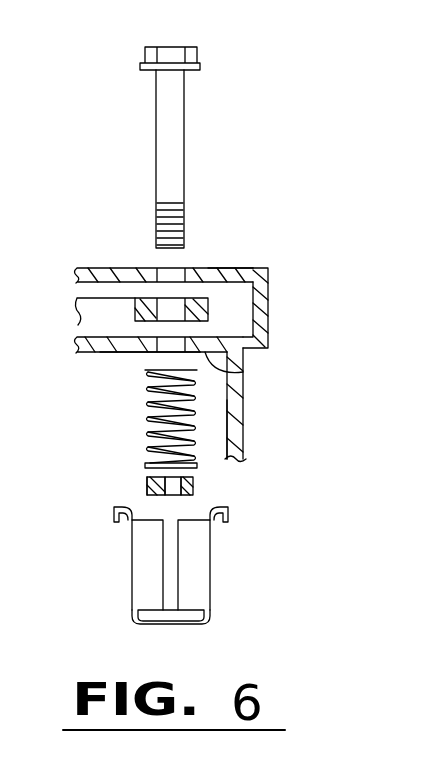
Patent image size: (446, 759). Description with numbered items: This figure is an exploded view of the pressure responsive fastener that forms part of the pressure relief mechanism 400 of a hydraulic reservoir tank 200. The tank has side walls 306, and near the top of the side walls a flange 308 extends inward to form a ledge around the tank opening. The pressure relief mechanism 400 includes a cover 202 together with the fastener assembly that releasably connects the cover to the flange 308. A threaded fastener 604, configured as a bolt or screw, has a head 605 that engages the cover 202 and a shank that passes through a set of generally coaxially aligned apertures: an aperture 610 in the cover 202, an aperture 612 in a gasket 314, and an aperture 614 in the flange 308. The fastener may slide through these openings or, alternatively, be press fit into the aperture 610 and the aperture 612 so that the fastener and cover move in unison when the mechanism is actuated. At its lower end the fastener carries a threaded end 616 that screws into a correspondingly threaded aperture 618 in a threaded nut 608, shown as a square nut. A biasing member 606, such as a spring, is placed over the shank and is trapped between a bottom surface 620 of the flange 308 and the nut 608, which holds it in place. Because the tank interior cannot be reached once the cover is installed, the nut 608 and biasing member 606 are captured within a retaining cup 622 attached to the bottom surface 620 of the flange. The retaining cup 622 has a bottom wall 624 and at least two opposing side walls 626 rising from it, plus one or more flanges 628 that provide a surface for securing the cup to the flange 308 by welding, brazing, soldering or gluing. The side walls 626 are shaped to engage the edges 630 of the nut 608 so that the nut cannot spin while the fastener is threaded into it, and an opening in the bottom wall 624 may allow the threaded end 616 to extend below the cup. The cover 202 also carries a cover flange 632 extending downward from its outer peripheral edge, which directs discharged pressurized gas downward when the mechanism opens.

The pressure relief mechanism 400 is at (84, 199).
The threaded fastener 604 is at (156, 147).
The head 605 is at (143, 52).
The threaded end 616 is at (188, 218).
The aperture 610 is at (178, 268).
The gasket 314 is at (136, 268).
The cover flange 632 is at (270, 300).
The cover 202 is at (252, 268).
The aperture 612 is at (200, 311).
The aperture 614 is at (80, 337).
The flange 308 is at (120, 354).
The side walls 306 is at (244, 398).
The reservoir tank 200 is at (244, 421).
The bottom surface 620 is at (246, 372).
The biasing member 606 is at (146, 432).
The threaded nut 608 is at (195, 489).
The edges 630 is at (147, 486).
The threaded aperture 618 is at (160, 498).
The retaining cup 622 is at (181, 578).
The side walls 626 is at (142, 586).
The bottom wall 624 is at (184, 624).
The flanges 628 is at (118, 516).